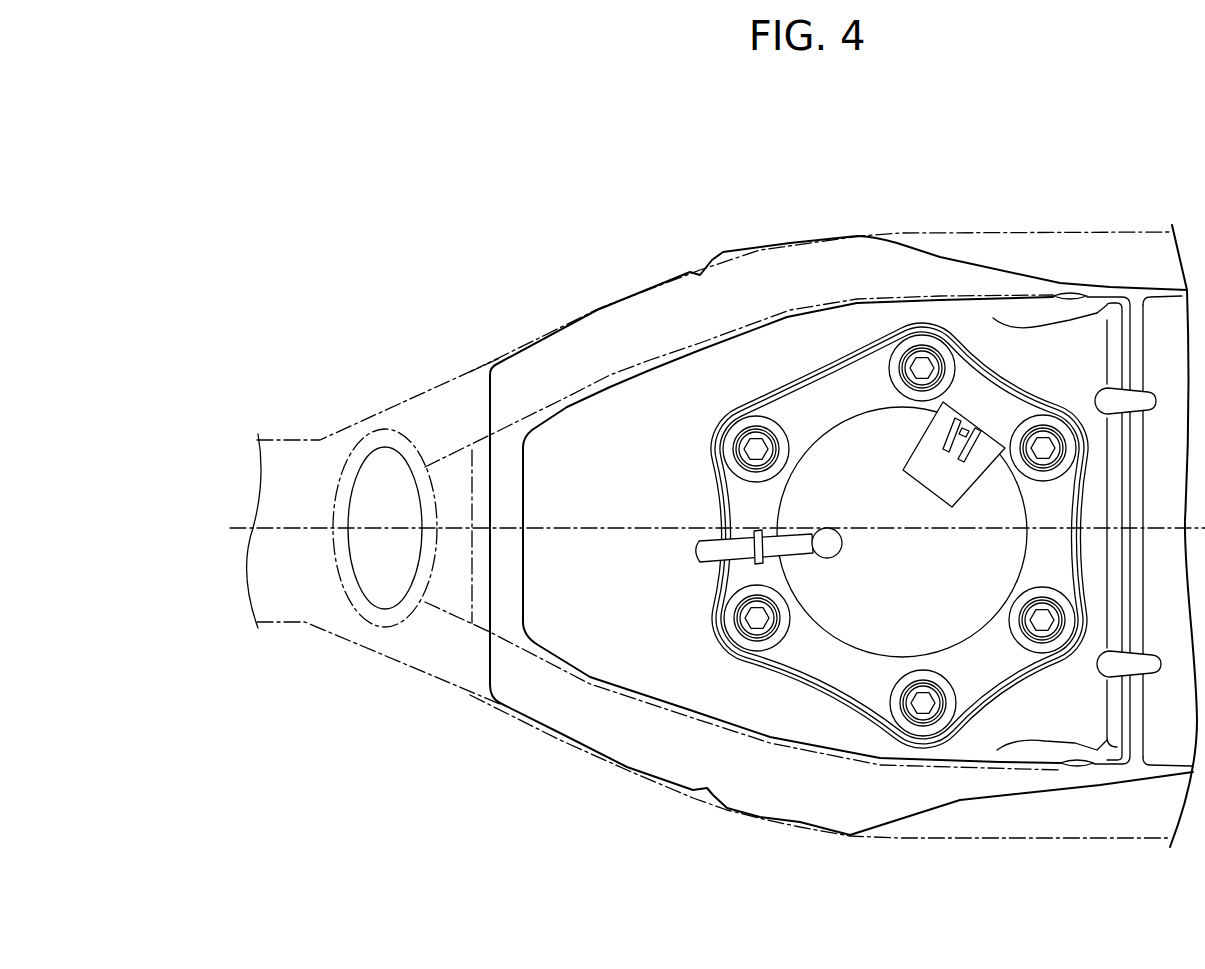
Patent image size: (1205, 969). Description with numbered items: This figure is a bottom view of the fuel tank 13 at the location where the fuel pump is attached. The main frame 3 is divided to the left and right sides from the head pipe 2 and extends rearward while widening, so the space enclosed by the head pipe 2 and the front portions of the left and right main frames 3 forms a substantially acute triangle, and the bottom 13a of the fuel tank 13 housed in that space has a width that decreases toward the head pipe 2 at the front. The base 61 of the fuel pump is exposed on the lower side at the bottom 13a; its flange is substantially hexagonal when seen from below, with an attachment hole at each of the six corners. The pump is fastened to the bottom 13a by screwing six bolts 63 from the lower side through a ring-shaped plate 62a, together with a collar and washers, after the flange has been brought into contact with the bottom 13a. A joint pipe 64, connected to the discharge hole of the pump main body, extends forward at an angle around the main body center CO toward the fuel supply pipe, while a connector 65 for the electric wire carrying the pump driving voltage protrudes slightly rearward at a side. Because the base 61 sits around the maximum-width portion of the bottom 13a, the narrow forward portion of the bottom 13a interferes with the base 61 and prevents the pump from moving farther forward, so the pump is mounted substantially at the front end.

The head pipe 2 is at (285, 452).
The main frame 3 is at (463, 393).
The fuel tank 13 is at (620, 325).
The bottom 13a is at (588, 647).
The base 61 is at (962, 608).
The ring-shaped plate 62a is at (840, 675).
The bolts 63 is at (756, 448).
The joint pipe 64 is at (701, 556).
The connector 65 is at (948, 417).
The main body center CO is at (695, 527).